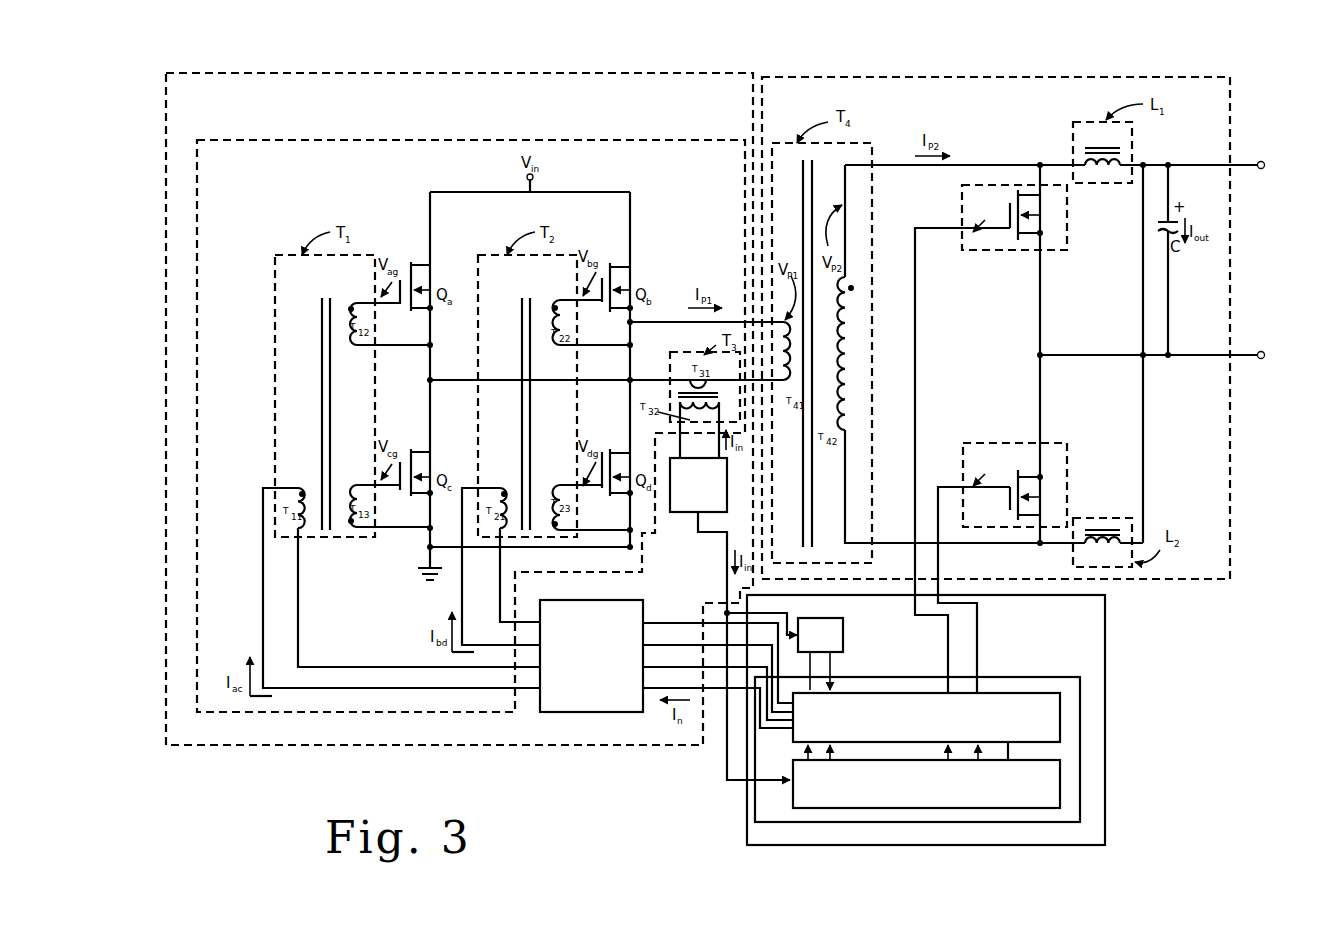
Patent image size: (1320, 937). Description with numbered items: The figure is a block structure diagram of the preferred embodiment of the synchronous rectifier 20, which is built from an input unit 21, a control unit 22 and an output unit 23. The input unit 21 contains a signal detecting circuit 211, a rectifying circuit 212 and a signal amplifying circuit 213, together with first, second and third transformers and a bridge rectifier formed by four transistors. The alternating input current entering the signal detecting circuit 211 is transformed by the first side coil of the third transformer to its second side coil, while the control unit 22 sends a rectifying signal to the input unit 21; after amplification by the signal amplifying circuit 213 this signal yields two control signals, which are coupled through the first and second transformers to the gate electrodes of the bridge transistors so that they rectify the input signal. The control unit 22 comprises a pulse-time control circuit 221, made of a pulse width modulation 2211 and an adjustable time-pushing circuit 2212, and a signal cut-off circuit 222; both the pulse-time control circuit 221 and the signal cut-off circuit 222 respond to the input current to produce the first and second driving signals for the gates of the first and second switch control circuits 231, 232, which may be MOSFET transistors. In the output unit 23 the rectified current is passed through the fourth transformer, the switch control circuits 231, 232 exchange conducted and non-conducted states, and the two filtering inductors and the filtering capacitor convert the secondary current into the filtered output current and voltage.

The synchronous rectifier 20 is at (1140, 48).
The input unit 21 is at (419, 72).
The rectifying circuit 212 is at (262, 140).
The signal amplifying circuit 213 is at (666, 664).
The signal detecting circuit 211 is at (671, 494).
The control unit 22 is at (1108, 798).
The pulse-time control circuit 221 is at (815, 823).
The adjustable time-pushing circuit 2212 is at (926, 717).
The pulse width modulation 2211 is at (926, 784).
The signal cut-off circuit 222 is at (823, 617).
The output unit 23 is at (932, 77).
The first switch control circuit 231 is at (1065, 200).
The second switch control circuit 232 is at (1068, 490).